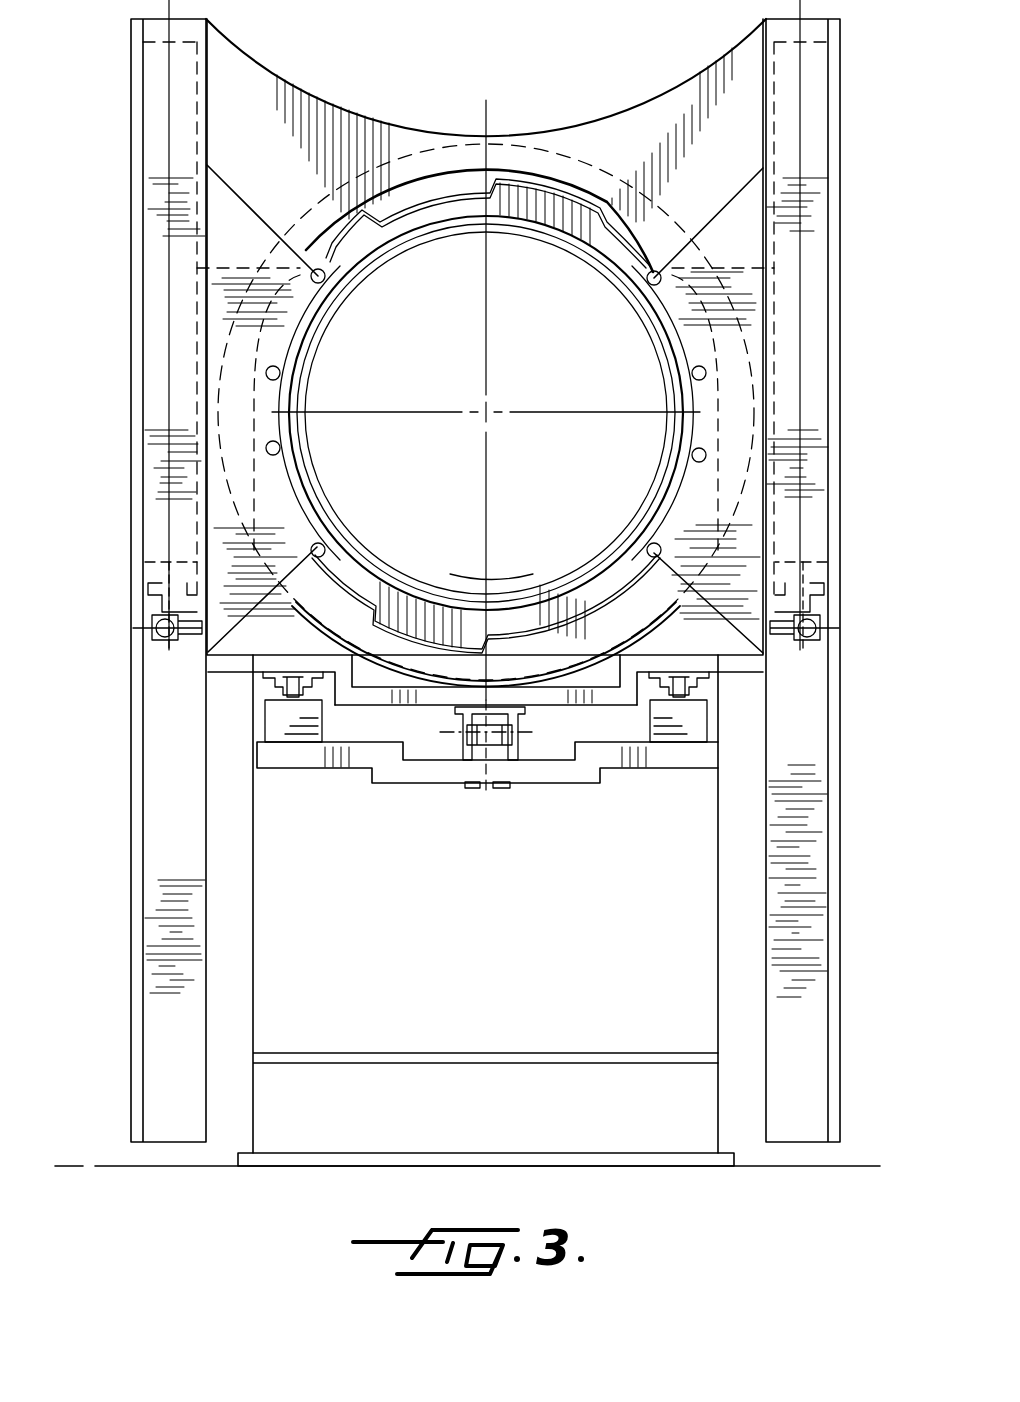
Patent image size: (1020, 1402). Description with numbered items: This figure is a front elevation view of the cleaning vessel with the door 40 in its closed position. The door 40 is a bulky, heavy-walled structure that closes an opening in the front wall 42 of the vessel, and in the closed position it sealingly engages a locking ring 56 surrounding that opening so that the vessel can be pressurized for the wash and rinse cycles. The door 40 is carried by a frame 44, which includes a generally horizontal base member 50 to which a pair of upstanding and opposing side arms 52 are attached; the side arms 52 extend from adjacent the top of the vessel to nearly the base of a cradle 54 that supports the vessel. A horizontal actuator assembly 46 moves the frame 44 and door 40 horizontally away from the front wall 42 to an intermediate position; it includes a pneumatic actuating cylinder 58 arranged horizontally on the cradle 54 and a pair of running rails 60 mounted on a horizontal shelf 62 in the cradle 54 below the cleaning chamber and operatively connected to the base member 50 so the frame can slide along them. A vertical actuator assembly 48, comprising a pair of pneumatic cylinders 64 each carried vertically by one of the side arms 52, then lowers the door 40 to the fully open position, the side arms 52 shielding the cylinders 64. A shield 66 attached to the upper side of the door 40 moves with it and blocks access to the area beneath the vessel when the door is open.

The door 40 is at (447, 460).
The front wall 42 is at (528, 197).
The frame 44 is at (240, 676).
The horizontal actuator assembly 46 is at (728, 673).
The vertical actuator assembly 48 is at (128, 276).
The base member 50 is at (425, 706).
The side arms 52 is at (548, 645).
The cradle 54 is at (332, 1113).
The locking ring 56 is at (404, 197).
The pneumatic actuating cylinder 58 is at (505, 750).
The running rails 60 is at (296, 680).
The horizontal shelf 62 is at (622, 762).
The pneumatic cylinders 64 is at (146, 562).
The shield 66 is at (300, 112).